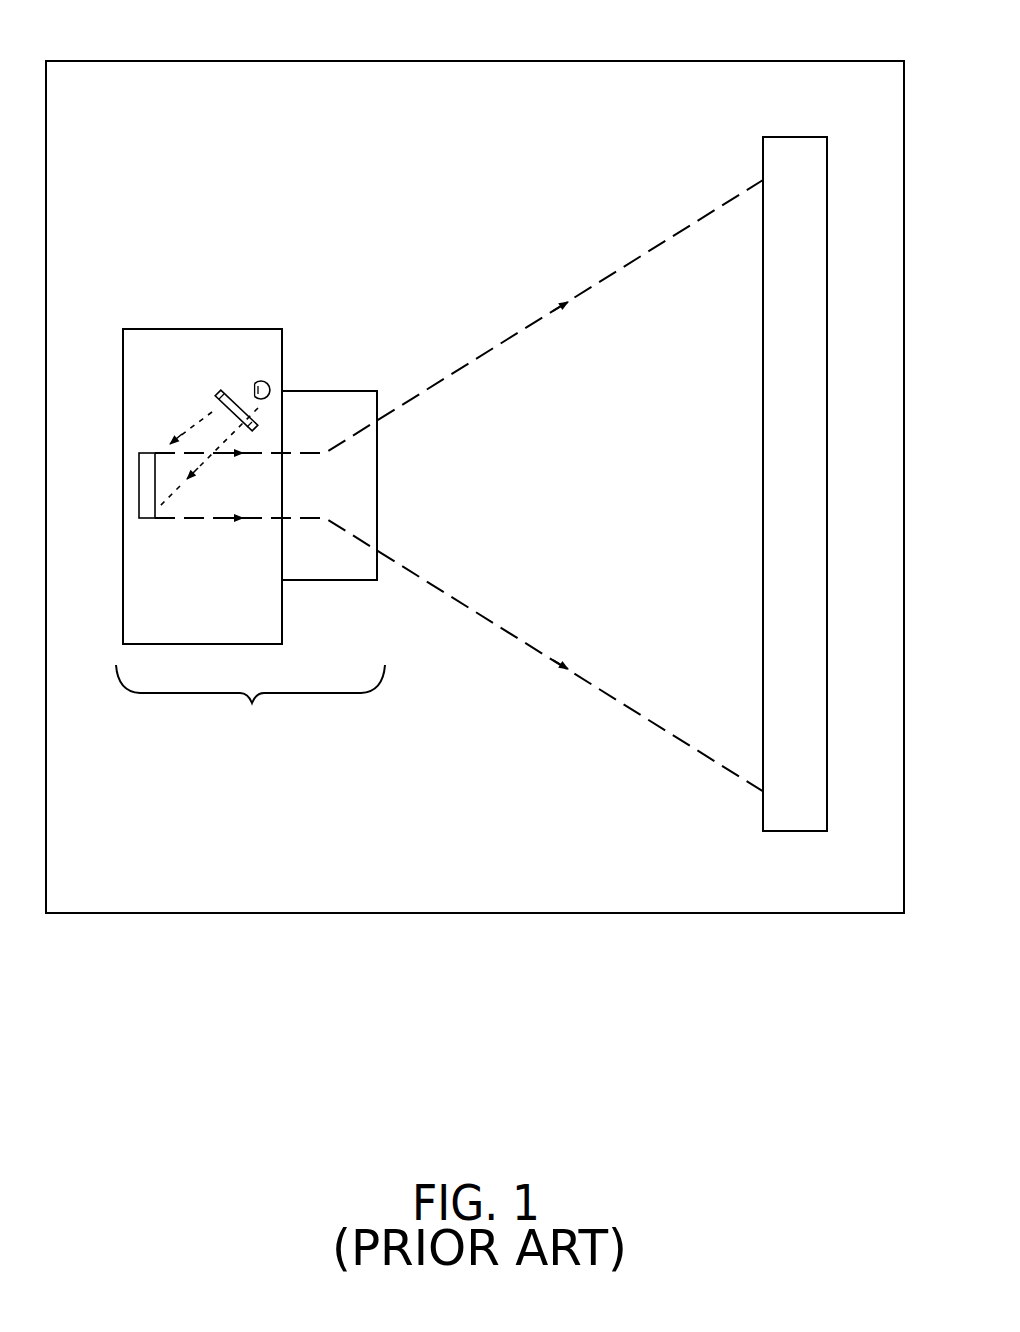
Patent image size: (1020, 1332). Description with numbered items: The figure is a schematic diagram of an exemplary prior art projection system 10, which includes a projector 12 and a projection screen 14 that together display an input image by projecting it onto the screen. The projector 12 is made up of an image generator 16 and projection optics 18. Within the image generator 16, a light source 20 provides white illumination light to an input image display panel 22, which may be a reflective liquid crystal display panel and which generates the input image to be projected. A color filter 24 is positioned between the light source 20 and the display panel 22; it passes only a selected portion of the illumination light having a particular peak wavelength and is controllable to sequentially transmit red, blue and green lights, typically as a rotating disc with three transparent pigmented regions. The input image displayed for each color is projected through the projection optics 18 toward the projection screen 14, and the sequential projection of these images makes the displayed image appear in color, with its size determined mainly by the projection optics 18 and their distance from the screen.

The projection system 10 is at (649, 61).
The projector 12 is at (250, 704).
The projection screen 14 is at (827, 307).
The image generator 16 is at (167, 329).
The projection optics 18 is at (328, 391).
The light source 20 is at (251, 384).
The input image display panel 22 is at (151, 519).
The color filter 24 is at (220, 394).